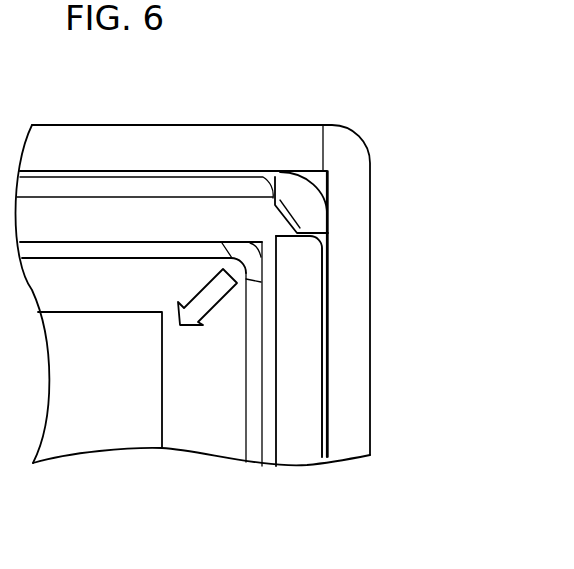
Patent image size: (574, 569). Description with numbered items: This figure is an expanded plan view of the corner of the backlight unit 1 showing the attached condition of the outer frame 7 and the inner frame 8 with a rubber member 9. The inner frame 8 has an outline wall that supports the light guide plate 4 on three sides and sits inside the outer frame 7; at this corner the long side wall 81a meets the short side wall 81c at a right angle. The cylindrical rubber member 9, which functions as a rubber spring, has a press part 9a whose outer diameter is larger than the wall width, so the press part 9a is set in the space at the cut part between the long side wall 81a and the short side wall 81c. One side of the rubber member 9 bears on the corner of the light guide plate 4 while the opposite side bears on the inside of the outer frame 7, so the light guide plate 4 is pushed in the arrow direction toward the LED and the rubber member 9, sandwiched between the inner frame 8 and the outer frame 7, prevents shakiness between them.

The backlight unit 1 is at (368, 150).
The light guide plate 4 is at (220, 433).
The outer frame 7 is at (362, 322).
The inner frame 8 is at (310, 410).
The rubber member 9 is at (312, 215).
The press part 9a is at (237, 253).
The long side wall 81a is at (140, 188).
The short side wall 81c is at (308, 362).